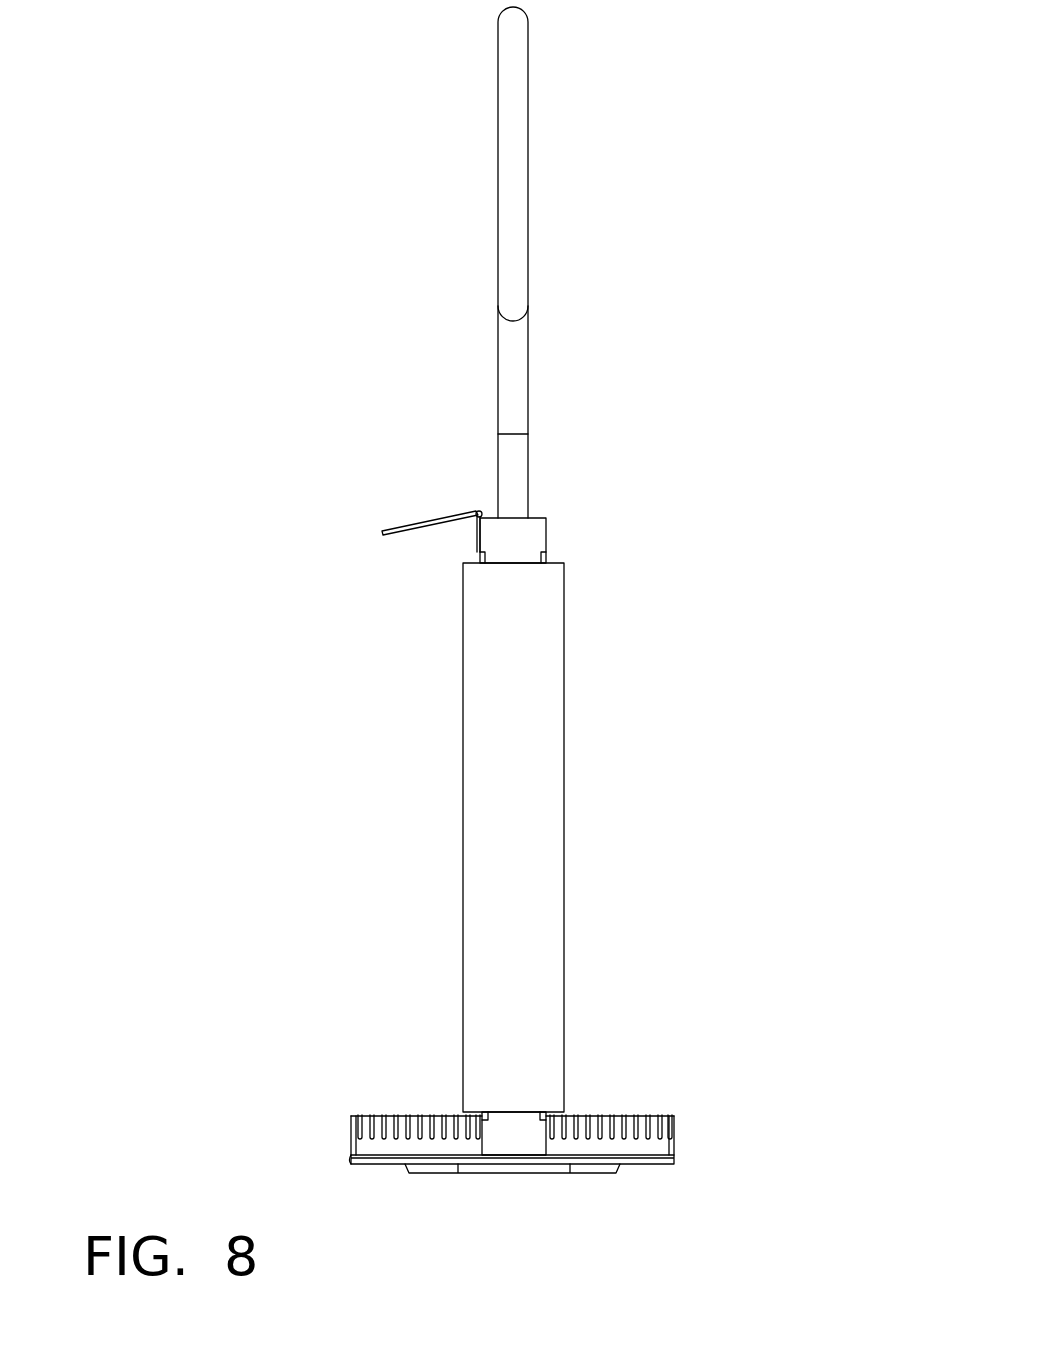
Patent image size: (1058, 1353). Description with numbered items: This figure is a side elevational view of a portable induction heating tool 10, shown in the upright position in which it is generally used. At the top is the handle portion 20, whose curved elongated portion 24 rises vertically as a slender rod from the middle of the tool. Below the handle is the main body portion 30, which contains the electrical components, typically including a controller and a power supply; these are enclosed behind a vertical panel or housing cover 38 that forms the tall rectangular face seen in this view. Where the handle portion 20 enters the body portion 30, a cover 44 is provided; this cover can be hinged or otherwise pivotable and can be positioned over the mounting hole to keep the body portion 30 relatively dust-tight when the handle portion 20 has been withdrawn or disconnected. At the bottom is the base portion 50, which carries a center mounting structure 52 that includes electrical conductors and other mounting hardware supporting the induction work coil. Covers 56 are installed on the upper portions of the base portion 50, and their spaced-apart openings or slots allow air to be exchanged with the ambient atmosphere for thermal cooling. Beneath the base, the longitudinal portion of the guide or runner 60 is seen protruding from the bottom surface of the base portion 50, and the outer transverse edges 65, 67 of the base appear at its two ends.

The induction heating tool 10 is at (670, 166).
The handle portion 20 is at (372, 190).
The curved elongated portion 24 is at (528, 232).
The main body portion 30 is at (680, 648).
The vertical panel or housing cover 38 is at (513, 837).
The cover 44 is at (425, 520).
The base portion 50 is at (306, 1033).
The center mounting structure 52 is at (511, 1143).
The covers 56 is at (628, 1115).
The guide 60 is at (610, 1173).
The outer transverse edge 65 is at (348, 1163).
The outer transverse edge 67 is at (674, 1163).